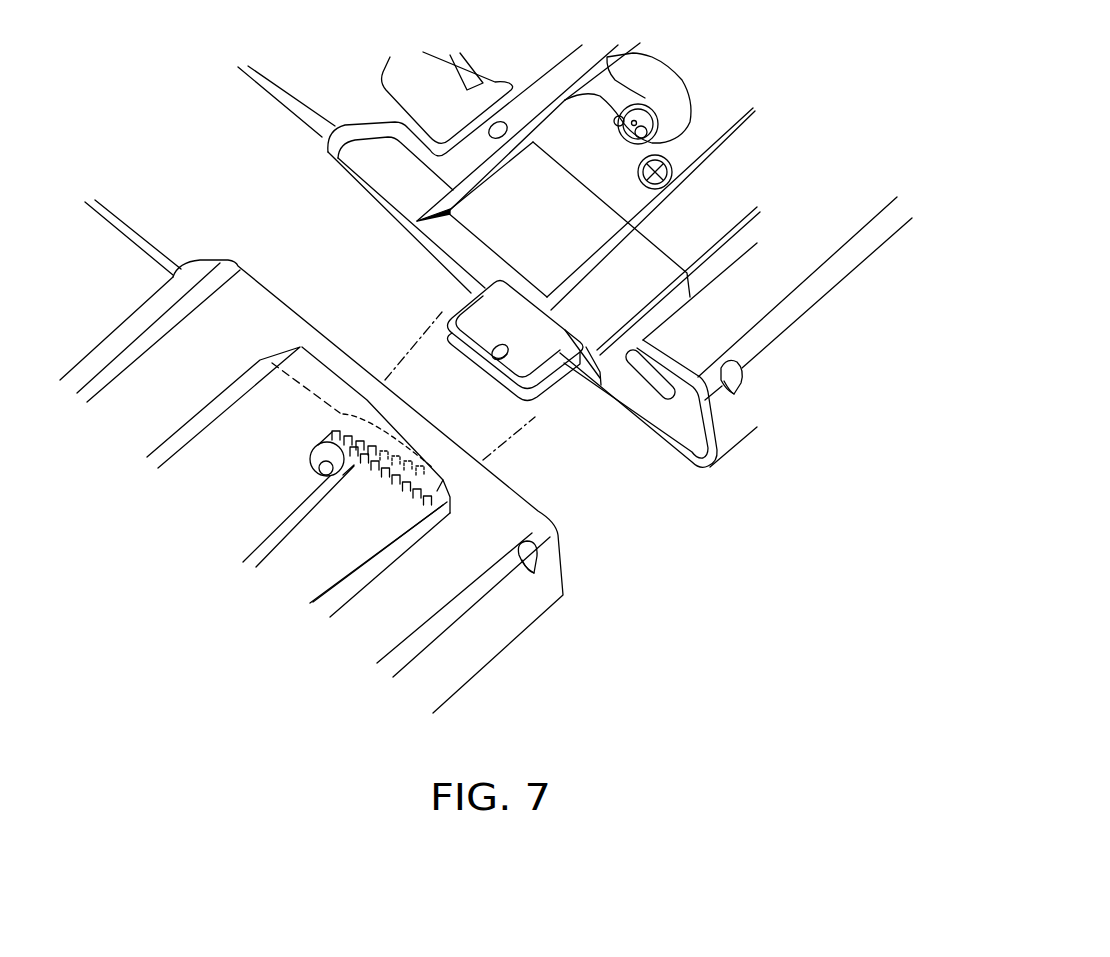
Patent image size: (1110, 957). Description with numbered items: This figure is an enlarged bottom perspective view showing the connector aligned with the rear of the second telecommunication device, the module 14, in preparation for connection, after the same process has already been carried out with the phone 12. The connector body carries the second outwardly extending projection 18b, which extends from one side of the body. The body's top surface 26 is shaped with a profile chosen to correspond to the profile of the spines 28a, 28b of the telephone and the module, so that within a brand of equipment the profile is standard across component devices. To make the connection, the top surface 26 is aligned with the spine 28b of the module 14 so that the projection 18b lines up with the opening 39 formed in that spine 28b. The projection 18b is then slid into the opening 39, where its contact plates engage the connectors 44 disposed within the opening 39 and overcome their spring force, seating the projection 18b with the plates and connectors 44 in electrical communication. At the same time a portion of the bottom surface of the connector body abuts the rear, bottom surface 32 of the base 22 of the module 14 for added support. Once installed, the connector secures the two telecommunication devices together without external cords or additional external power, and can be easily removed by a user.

The phone 12 is at (250, 88).
The module 14 is at (156, 226).
The second projection 18b is at (538, 365).
The base 22 is at (503, 625).
The top surface 26 is at (555, 225).
The spine 28a is at (727, 208).
The spine 28b is at (340, 559).
The rear, bottom surface 32 is at (420, 602).
The opening 39 is at (450, 511).
The connectors 44 is at (383, 433).